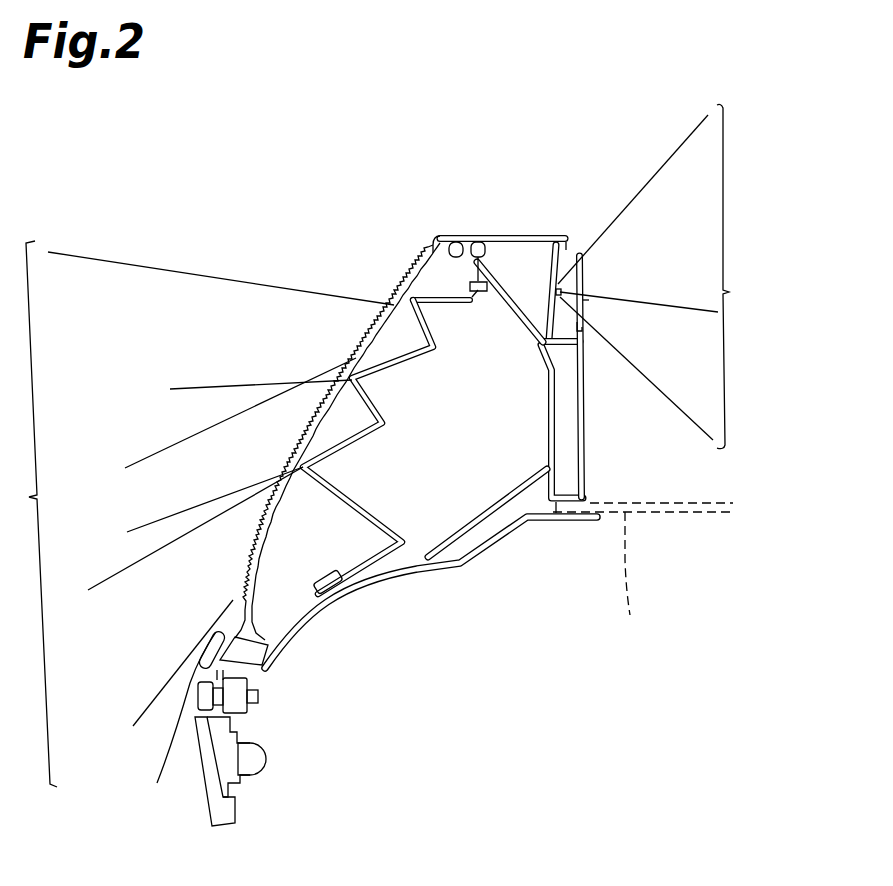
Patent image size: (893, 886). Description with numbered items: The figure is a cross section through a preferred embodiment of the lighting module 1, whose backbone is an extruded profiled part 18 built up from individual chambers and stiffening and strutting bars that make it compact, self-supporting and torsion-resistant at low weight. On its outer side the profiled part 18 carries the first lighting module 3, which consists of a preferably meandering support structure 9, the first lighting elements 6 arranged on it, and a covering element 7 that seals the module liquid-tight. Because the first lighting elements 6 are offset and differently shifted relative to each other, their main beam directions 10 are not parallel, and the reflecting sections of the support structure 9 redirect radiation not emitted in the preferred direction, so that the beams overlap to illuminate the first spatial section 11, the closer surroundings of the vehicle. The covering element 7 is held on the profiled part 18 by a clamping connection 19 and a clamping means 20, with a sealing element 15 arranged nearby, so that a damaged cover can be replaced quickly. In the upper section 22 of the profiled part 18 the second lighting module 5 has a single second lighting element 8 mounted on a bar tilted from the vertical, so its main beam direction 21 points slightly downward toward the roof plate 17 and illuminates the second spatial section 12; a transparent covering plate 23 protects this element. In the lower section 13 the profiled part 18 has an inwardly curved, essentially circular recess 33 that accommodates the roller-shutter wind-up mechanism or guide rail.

The lighting module 1 is at (370, 160).
The first lighting module 3 is at (228, 562).
The second lighting module 5 is at (561, 270).
The first lighting element 6 is at (396, 303).
The covering element 7 is at (434, 237).
The second lighting element 8 is at (576, 287).
The support structure 9 is at (421, 342).
The main beam direction 10 is at (145, 458).
The first spatial section 11 is at (30, 514).
The second spatial section 12 is at (739, 276).
The lower section 13 is at (435, 620).
The sealing element 15 is at (268, 765).
The roof plate 17 is at (643, 575).
The profiled part 18 is at (594, 332).
The clamping connection 19 is at (428, 230).
The clamping means 20 is at (198, 728).
The main beam direction 21 is at (650, 297).
The upper section 22 is at (640, 232).
The transparent covering plate 23 is at (588, 306).
The recess 33 is at (327, 628).